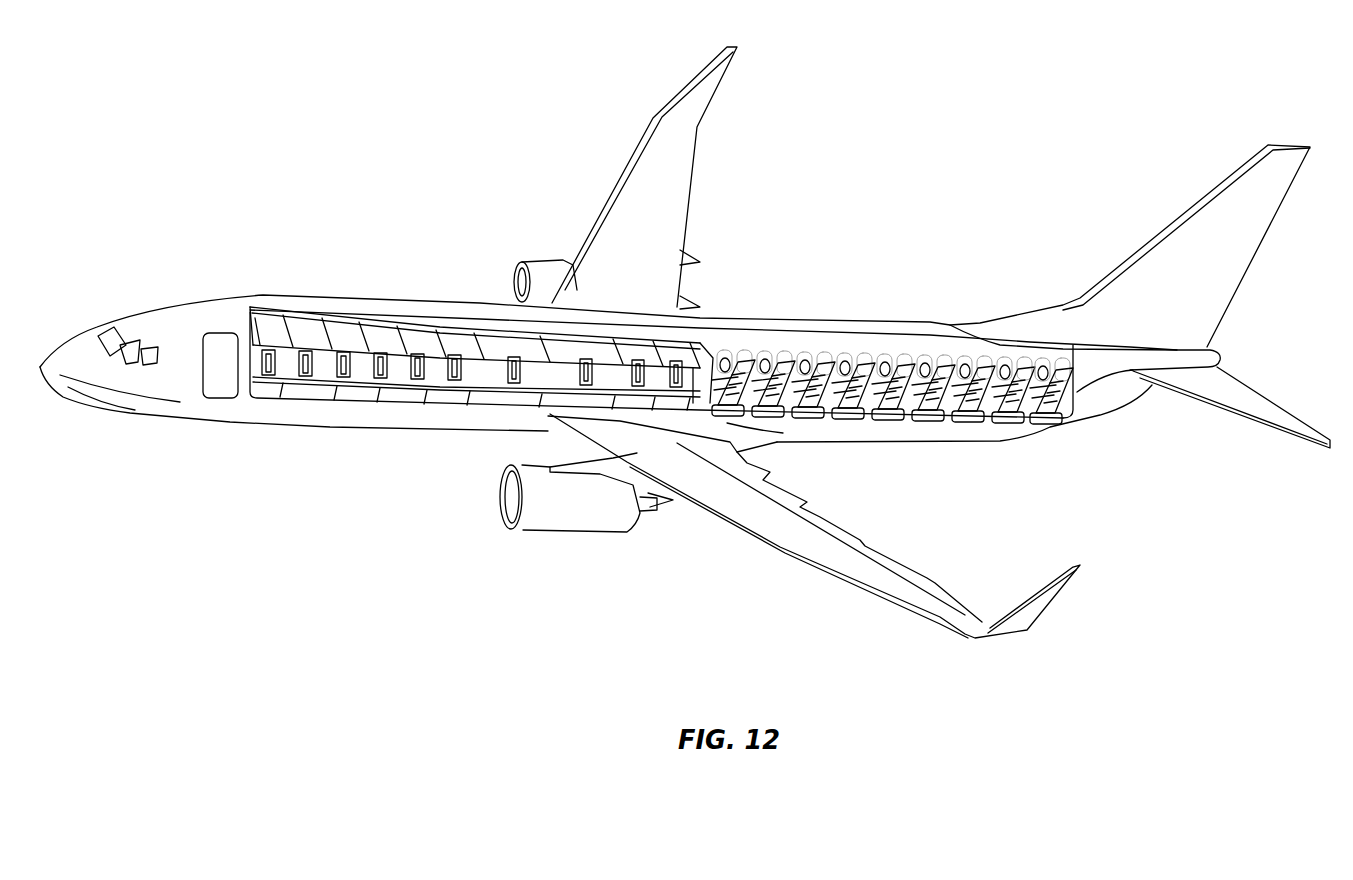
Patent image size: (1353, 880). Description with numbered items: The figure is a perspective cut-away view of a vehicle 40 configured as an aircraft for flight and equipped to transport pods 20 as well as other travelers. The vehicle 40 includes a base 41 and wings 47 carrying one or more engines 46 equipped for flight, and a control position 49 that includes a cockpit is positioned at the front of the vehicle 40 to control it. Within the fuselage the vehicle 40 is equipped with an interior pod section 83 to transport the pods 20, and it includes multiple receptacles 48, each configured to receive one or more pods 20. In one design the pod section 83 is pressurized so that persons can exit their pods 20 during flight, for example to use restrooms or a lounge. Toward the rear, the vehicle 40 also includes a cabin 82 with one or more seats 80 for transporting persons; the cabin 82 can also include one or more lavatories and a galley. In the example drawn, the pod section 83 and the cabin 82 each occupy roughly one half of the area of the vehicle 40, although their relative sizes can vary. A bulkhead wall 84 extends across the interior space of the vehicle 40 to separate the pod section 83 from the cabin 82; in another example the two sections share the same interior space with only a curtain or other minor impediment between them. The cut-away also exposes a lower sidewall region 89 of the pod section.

The pod 20 is at (495, 330).
The vehicle 40 is at (953, 430).
The base 41 is at (397, 395).
The engine 46 is at (535, 285).
The wing 47 is at (680, 163).
The receptacle 48 is at (473, 390).
The control position 49 is at (140, 325).
The seat 80 is at (830, 370).
The cabin 82 is at (881, 346).
The pod section 83 is at (331, 294).
The bulkhead wall 84 is at (703, 345).
The cutaway sidewall 89 is at (283, 385).